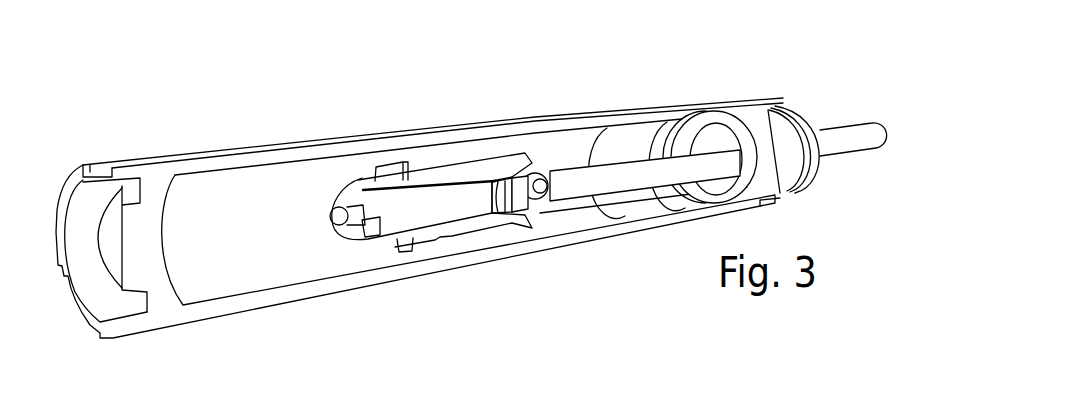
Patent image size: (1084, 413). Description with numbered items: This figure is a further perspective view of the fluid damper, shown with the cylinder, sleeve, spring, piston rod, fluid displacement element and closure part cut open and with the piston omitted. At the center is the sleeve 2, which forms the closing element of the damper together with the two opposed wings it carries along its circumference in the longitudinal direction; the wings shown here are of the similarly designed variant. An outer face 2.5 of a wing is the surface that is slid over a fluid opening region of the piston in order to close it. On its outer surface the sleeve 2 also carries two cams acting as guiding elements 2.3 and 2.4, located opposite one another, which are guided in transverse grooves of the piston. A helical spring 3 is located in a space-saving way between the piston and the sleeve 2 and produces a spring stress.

The sleeve 2 is at (388, 208).
The guiding element 2.3 is at (388, 165).
The guiding element 2.4 is at (415, 247).
The outer face 2.5 is at (390, 240).
The helical spring 3 is at (500, 180).